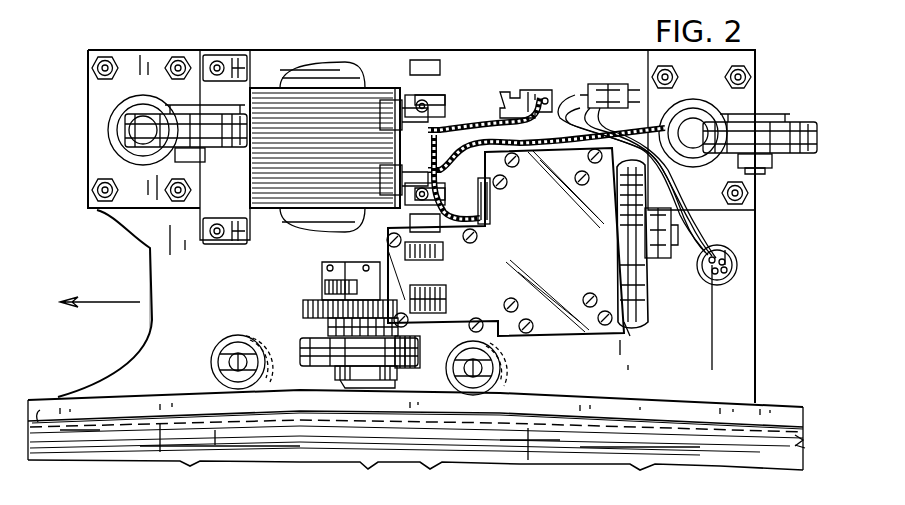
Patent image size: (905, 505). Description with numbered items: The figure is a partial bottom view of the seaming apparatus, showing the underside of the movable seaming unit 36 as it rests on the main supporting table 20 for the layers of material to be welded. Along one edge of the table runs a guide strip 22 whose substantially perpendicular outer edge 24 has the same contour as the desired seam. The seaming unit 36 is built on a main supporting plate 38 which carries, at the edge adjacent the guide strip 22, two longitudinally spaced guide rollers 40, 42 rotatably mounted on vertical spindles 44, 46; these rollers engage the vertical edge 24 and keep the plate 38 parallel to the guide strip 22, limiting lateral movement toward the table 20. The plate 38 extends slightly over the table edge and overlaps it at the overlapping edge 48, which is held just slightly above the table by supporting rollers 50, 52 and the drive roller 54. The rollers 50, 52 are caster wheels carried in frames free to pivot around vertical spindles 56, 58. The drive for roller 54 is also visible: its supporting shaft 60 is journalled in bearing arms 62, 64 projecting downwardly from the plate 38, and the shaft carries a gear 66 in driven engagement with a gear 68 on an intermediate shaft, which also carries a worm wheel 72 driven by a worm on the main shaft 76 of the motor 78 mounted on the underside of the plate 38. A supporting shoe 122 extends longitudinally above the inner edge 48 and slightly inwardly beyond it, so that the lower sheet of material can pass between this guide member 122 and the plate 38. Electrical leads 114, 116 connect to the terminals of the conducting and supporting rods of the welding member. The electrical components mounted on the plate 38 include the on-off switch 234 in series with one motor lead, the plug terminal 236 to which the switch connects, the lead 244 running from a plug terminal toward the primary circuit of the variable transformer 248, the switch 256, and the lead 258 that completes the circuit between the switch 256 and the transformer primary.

The main supporting table 20 is at (130, 447).
The guide strip 22 is at (612, 402).
The outer edge 24 is at (565, 396).
The seaming unit 36 is at (138, 266).
The main supporting plate 38 is at (470, 80).
The guide roller 40 is at (212, 359).
The guide roller 42 is at (482, 366).
The vertical spindle 44 is at (260, 364).
The vertical spindle 46 is at (500, 372).
The overlapping edge 48 is at (527, 455).
The supporting roller 50 is at (126, 125).
The supporting roller 52 is at (775, 133).
The drive roller 54 is at (300, 346).
The vertical spindle 56 is at (128, 143).
The vertical spindle 58 is at (722, 118).
The supporting shaft 60 is at (330, 326).
The bearing arm 62 is at (337, 376).
The bearing arm 64 is at (325, 284).
The gear 66 is at (305, 304).
The gear 68 is at (428, 313).
The worm wheel 72 is at (430, 260).
The main shaft 76 is at (630, 322).
The motor 78 is at (480, 176).
The electrical lead 114 is at (446, 108).
The electrical lead 116 is at (445, 205).
The supporting shoe 122 is at (358, 452).
The on-off switch 234 is at (592, 84).
The plug terminal 236 is at (710, 286).
The lead 244 is at (490, 140).
The variable transformer 248 is at (305, 88).
The switch 256 is at (530, 92).
The lead 258 is at (478, 113).